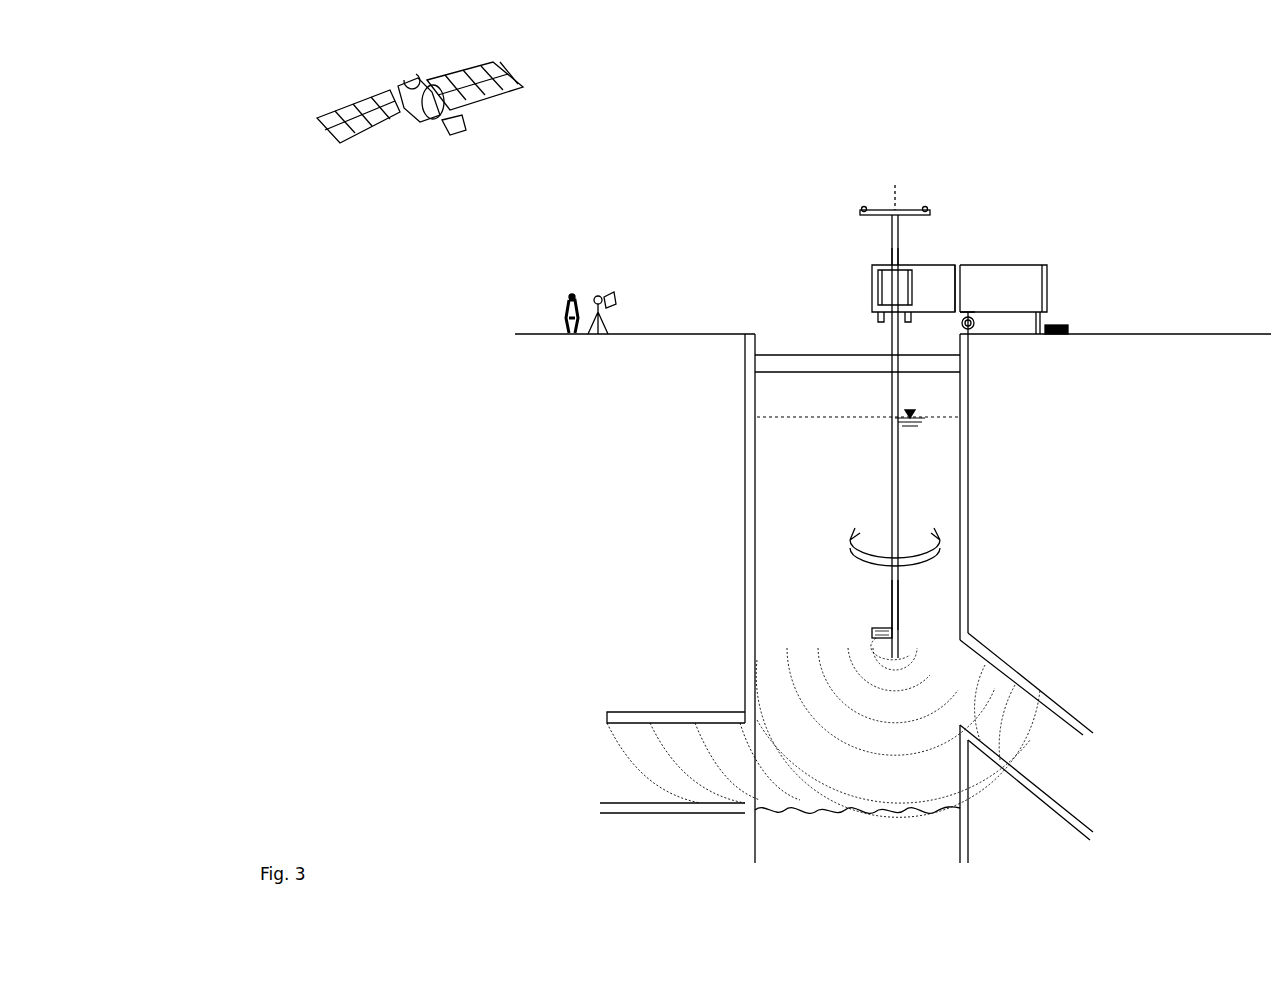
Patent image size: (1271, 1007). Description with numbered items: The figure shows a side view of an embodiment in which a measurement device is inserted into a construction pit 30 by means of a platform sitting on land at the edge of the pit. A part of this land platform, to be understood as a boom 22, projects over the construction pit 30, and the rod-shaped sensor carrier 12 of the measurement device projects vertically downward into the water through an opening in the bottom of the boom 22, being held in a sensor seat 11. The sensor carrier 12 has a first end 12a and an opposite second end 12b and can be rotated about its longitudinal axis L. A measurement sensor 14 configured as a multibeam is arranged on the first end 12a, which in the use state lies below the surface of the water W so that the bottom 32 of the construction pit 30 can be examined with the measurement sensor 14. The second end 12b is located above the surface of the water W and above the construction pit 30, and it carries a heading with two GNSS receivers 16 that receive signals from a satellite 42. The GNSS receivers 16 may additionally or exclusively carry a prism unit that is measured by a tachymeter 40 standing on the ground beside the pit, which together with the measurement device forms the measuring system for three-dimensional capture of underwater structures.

The satellite 42 is at (318, 120).
The tachymeter 40 is at (596, 295).
The two GNSS receivers 16 is at (925, 209).
The second end 12b is at (890, 252).
The sensor seat 11 is at (872, 295).
The boom 22 is at (923, 268).
The construction pit 30 is at (967, 530).
The first end 12a is at (895, 592).
The longitudinal axis L is at (895, 622).
The sensor carrier 12 is at (895, 470).
The measurement sensor 14 is at (872, 635).
The bottom 32 is at (1045, 712).
The surface of the water W is at (772, 418).